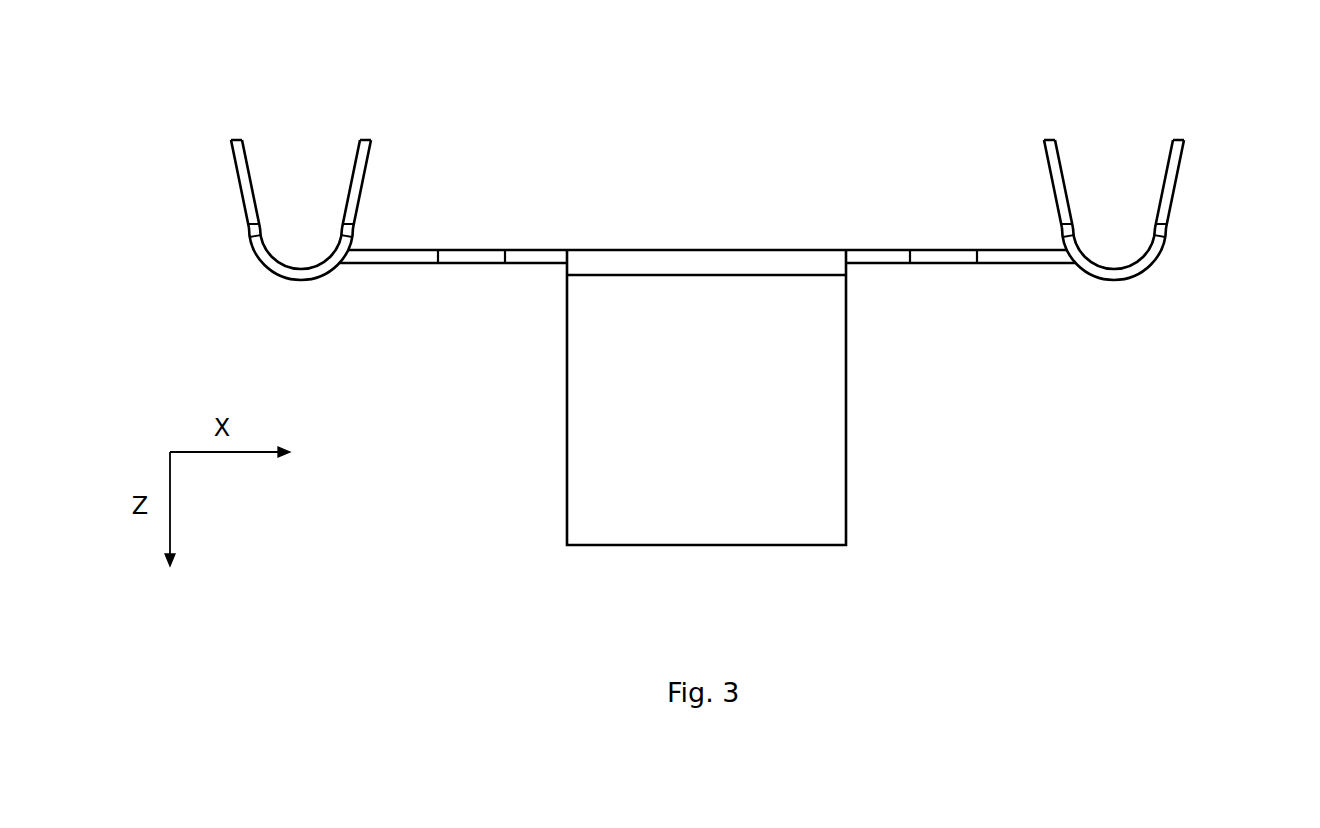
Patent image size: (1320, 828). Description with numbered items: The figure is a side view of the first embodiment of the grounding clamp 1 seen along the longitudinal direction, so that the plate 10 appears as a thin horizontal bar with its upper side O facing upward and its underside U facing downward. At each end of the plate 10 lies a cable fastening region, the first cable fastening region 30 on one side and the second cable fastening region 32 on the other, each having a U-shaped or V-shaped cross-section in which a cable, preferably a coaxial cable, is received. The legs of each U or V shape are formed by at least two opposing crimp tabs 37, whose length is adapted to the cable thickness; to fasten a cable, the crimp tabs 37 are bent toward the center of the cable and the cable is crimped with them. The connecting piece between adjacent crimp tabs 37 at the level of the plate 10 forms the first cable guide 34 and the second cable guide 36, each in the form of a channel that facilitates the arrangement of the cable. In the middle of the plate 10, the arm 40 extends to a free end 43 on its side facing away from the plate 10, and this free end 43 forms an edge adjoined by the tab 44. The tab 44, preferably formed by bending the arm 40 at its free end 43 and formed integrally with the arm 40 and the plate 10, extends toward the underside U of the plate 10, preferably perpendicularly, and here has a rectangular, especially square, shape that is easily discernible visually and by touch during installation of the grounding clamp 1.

The grounding clamp 1 is at (741, 63).
The plate 10 is at (707, 234).
The upper side O is at (868, 250).
The underside U is at (492, 264).
The first cable fastening region 30 is at (1114, 209).
The second cable fastening region 32 is at (713, 209).
The first cable guide 34 is at (1116, 247).
The second cable guide 36 is at (301, 252).
The crimp tabs 37 is at (243, 186).
The arm 40 is at (723, 265).
The free end 43 is at (706, 230).
The tab 44 is at (590, 383).